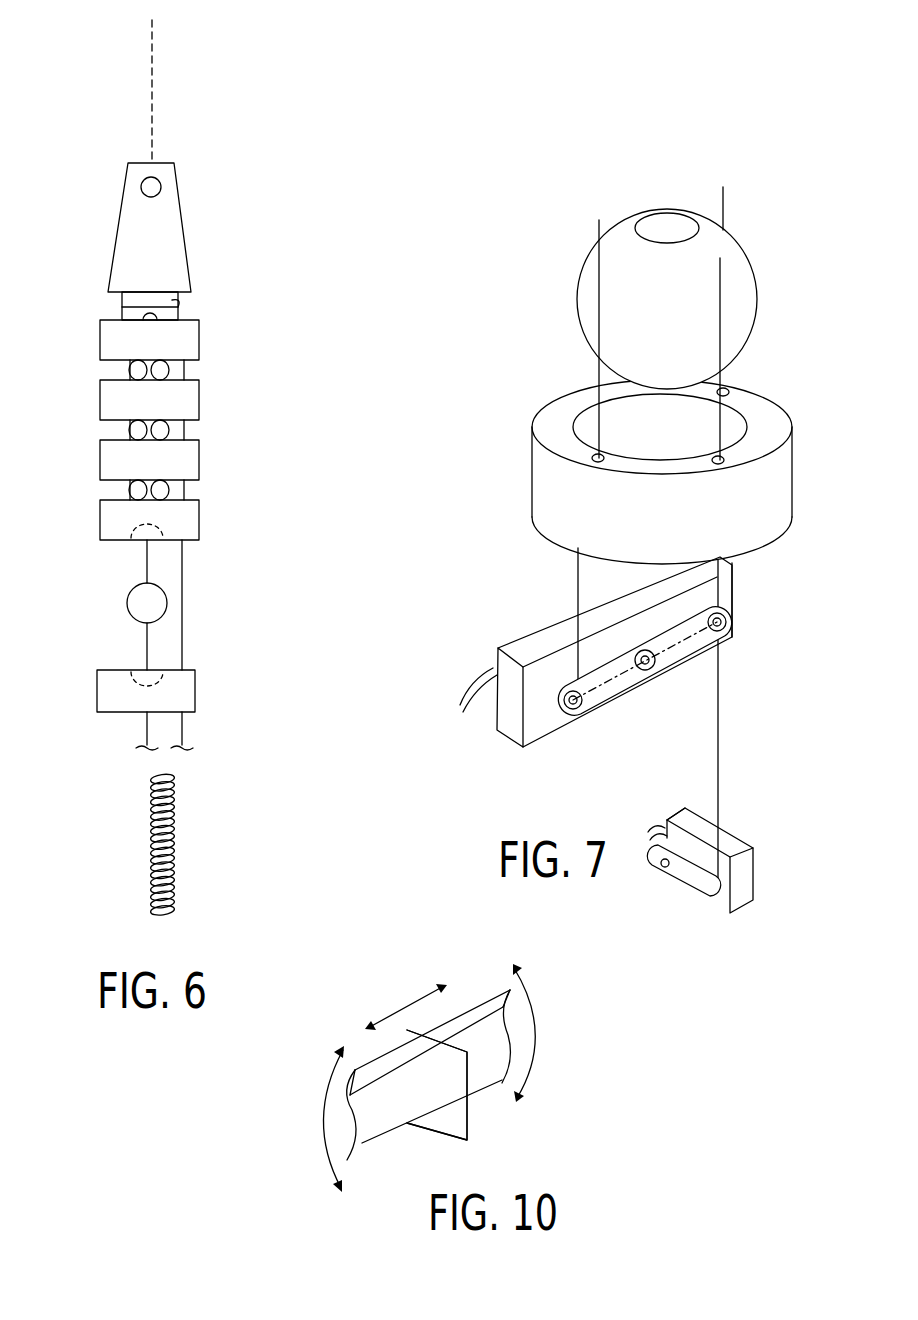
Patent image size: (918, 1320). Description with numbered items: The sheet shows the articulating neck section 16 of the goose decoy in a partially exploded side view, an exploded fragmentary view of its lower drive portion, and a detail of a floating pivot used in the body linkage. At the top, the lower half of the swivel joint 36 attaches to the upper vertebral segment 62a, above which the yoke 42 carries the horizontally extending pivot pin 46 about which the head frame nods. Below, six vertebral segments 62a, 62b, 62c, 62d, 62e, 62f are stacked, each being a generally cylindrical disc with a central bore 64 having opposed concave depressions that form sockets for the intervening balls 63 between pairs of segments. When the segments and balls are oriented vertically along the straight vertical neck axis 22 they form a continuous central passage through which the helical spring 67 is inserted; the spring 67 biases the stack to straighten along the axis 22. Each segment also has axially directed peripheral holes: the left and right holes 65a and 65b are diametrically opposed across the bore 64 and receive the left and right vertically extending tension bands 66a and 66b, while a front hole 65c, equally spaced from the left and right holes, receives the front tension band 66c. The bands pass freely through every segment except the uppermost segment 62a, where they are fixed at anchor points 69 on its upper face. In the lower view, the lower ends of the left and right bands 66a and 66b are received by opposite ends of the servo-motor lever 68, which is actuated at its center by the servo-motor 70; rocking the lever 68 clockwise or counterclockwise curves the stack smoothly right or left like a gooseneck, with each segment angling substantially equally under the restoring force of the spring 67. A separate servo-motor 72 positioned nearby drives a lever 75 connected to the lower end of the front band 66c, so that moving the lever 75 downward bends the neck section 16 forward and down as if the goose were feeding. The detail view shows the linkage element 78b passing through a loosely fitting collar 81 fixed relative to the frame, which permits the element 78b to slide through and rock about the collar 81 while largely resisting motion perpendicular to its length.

In FIG. 6, the vertical neck axis 22 is at (150, 80).
In FIG. 6, the yoke 42 is at (138, 240).
In FIG. 6, the pivot pin 46 is at (142, 184).
In FIG. 6, the swivel joint 36 is at (110, 305).
In FIG. 6, the anchor points 69 is at (158, 308).
In FIG. 6, the upper vertebral segment 62a is at (100, 338).
In FIG. 6, the vertebral segment 62b is at (100, 398).
In FIG. 6, the vertebral segment 62c is at (100, 458).
In FIG. 6, the vertebral segment 62d is at (100, 518).
In FIG. 6, the vertebral segment 62e is at (97, 686).
In FIG. 7, the lower vertebral segment 62f is at (790, 470).
In FIG. 6, the balls 63 is at (160, 368).
In FIG. 7, the balls 63 is at (585, 302).
In FIG. 7, the central bore 64 is at (588, 425).
In FIG. 7, the left hole 65a is at (597, 455).
In FIG. 7, the right hole 65b is at (728, 388).
In FIG. 7, the front hole 65c is at (723, 458).
In FIG. 7, the left tension band 66a is at (598, 252).
In FIG. 7, the right tension band 66b is at (725, 207).
In FIG. 7, the front tension band 66c is at (722, 312).
In FIG. 6, the neck section 16 is at (217, 473).
In FIG. 6, the helical spring 67 is at (175, 808).
In FIG. 7, the servo-motor lever 68 is at (618, 693).
In FIG. 7, the servo-motor 70 is at (507, 724).
In FIG. 7, the servo-motor 72 is at (742, 866).
In FIG. 7, the lever 75 is at (670, 872).
In FIG. 10, the linkage element 78b is at (480, 1020).
In FIG. 10, the collar 81 is at (472, 1131).